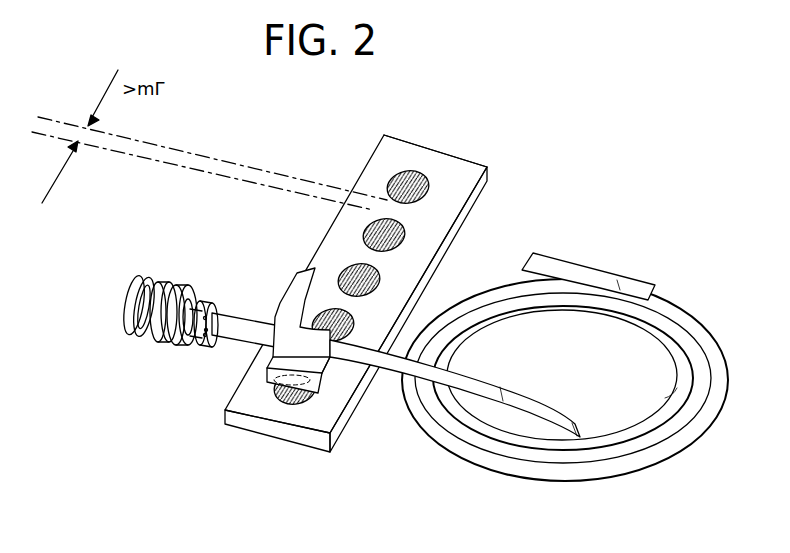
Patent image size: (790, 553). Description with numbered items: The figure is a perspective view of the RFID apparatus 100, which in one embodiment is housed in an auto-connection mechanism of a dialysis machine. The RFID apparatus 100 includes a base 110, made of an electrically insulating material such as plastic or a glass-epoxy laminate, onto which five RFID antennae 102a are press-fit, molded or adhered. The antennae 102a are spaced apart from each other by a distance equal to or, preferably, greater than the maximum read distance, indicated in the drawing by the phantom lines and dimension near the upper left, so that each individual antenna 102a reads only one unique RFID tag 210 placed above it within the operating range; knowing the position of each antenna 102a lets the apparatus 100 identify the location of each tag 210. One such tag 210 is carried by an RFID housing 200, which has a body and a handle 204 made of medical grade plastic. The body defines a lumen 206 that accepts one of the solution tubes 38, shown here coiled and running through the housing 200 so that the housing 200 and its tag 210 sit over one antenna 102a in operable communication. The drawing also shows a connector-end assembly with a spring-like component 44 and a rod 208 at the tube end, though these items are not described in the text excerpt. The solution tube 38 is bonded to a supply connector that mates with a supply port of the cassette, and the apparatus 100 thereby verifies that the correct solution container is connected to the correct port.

The solution tube 38 is at (648, 288).
The spring washers 44 is at (163, 282).
The RFID apparatus 100 is at (221, 429).
The RFID antennae 102a is at (398, 225).
The base 110 is at (487, 168).
The RFID housing 200 is at (227, 306).
The handle 204 is at (267, 373).
The lumen 206 is at (443, 366).
The rod 208 is at (231, 311).
The RFID tag 210 is at (334, 372).